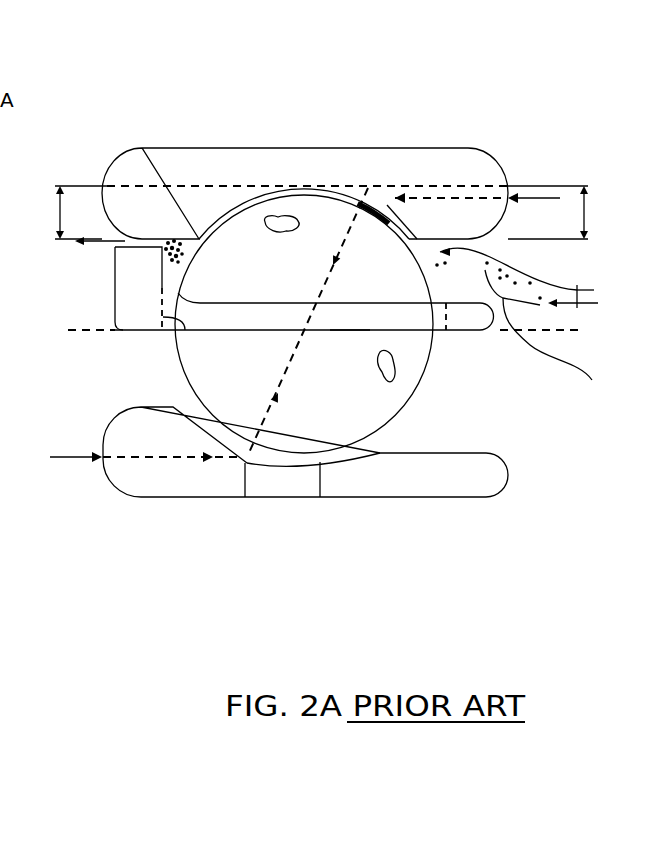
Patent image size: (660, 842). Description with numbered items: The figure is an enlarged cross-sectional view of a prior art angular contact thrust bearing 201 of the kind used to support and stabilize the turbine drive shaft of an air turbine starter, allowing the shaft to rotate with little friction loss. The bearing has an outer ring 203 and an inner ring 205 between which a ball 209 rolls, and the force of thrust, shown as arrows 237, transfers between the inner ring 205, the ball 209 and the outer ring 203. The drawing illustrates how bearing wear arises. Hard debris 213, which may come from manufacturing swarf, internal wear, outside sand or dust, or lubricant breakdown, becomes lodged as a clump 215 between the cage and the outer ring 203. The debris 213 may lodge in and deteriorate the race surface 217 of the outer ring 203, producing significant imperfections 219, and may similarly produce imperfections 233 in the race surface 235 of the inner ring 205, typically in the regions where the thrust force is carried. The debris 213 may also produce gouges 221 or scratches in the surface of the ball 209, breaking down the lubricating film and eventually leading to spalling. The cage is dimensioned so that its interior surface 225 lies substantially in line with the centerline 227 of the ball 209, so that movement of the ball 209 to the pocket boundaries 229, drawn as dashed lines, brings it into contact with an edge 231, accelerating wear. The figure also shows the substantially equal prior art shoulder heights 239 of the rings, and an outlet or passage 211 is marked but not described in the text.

The angular contact thrust bearing 201 is at (446, 109).
The outer ring 203 is at (172, 224).
The inner ring 205 is at (462, 484).
The ball 209 is at (250, 400).
The ink flow outlet 211 is at (100, 244).
The hard debris 213 is at (592, 380).
The clump 215 is at (198, 257).
The race surface 217 is at (302, 187).
The imperfections 219 is at (363, 200).
The gouges 221 is at (270, 217).
The interior surface 225 is at (350, 333).
The centerline 227 is at (505, 333).
The boundaries 229 is at (413, 303).
The edge 231 is at (162, 332).
The imperfections 233 is at (245, 497).
The race surface 235 is at (318, 497).
The arrows 237 is at (306, 334).
The shoulder heights 239 is at (58, 204).